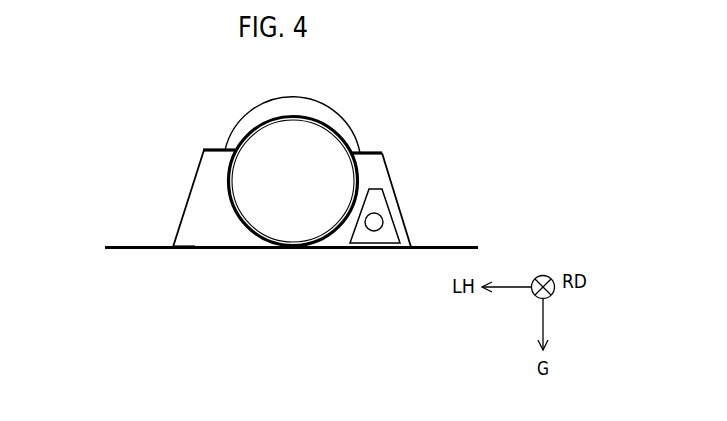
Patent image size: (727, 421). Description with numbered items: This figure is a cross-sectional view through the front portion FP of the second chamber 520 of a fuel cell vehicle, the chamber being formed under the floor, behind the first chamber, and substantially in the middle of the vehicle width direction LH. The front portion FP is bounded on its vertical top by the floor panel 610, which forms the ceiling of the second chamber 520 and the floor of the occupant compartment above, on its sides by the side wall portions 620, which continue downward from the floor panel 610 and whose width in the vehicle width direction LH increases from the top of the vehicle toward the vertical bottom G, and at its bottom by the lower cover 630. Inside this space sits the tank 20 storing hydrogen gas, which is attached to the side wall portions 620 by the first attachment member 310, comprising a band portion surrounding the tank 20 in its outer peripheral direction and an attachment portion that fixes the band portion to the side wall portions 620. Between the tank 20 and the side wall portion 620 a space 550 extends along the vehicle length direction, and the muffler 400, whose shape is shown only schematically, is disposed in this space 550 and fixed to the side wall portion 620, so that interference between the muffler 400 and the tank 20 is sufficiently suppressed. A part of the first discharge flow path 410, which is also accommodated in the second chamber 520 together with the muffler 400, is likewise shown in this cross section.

The tank 20 is at (303, 196).
The first attachment member 310 is at (227, 172).
The muffler 400 is at (392, 196).
The first discharge flow path 410 is at (383, 221).
The second chamber 520 is at (230, 228).
The space 550 is at (343, 233).
The floor panel 610 is at (343, 116).
The side wall portions 620 is at (388, 163).
The lower cover 630 is at (180, 250).